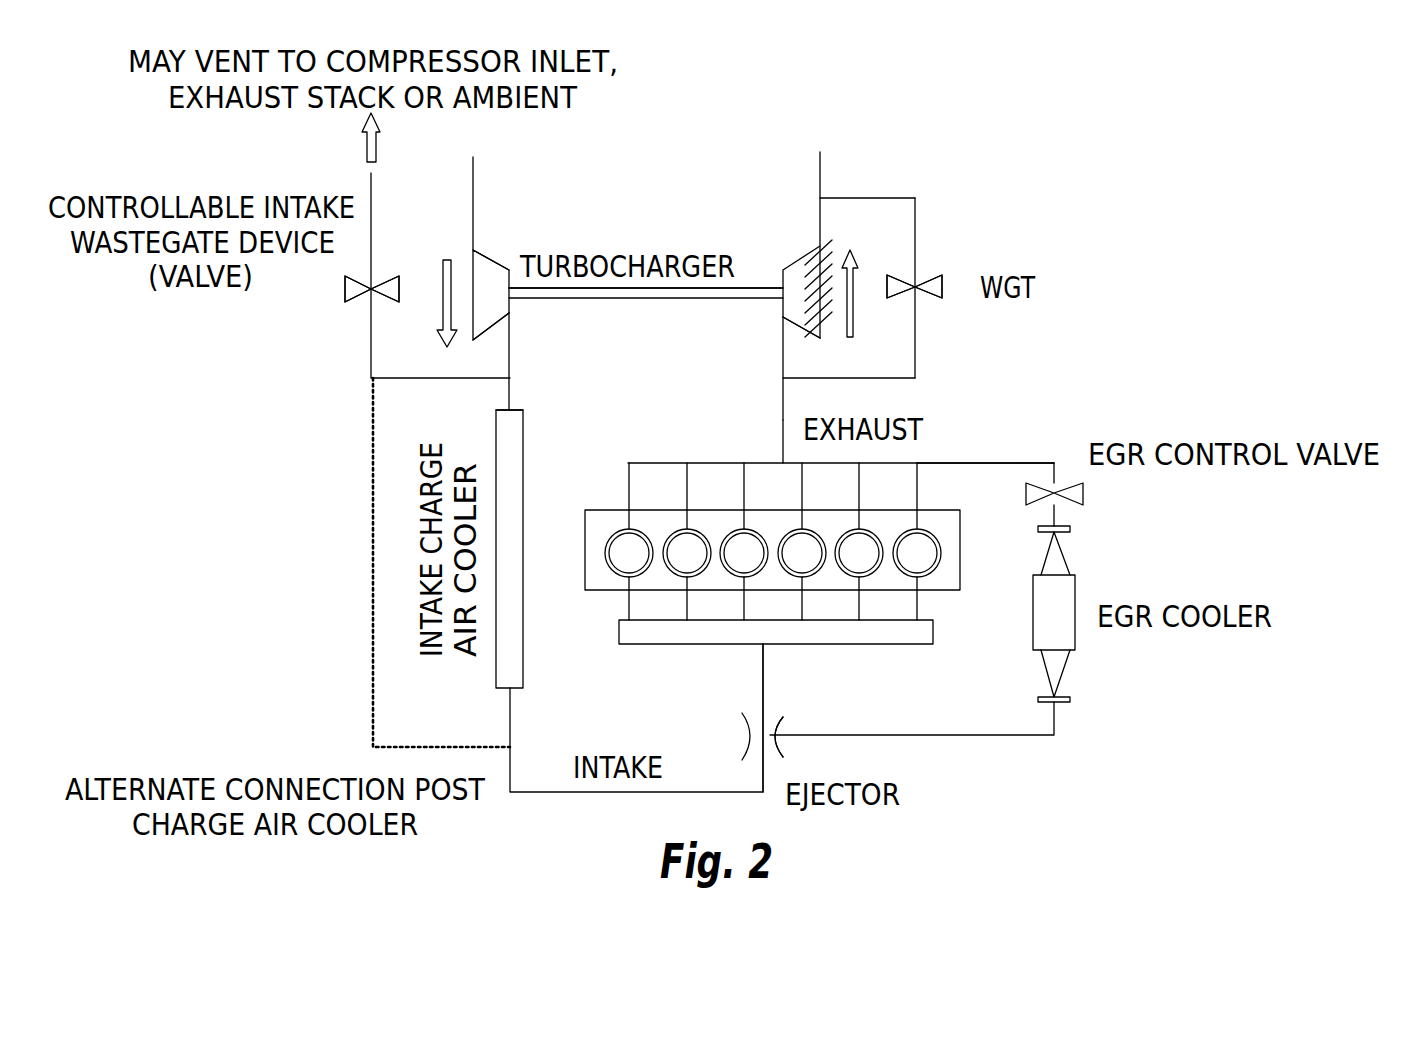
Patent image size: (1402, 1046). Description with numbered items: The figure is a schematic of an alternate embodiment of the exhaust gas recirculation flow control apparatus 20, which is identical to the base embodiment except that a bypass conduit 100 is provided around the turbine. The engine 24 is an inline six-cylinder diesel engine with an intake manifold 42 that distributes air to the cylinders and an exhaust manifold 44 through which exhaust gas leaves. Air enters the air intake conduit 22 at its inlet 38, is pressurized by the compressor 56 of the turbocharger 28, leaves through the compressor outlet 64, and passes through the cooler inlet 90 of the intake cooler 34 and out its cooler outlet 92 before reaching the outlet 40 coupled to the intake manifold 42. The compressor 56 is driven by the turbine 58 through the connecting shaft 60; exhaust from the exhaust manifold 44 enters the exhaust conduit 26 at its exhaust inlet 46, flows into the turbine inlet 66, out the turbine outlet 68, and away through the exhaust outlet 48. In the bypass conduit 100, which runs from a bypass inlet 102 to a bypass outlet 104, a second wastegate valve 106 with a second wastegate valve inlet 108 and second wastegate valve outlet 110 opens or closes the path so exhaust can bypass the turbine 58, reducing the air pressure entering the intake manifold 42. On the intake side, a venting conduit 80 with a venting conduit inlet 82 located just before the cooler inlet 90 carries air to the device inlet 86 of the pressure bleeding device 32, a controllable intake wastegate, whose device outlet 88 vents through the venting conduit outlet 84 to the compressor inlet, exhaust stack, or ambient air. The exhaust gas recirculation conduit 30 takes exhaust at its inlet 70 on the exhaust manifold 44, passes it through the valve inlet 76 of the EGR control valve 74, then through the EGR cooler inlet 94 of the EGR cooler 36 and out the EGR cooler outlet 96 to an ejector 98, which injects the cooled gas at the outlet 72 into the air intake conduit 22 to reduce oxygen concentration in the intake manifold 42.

The apparatus 20 is at (1058, 154).
The air intake conduit 22 is at (478, 200).
The engine 24 is at (945, 590).
The exhaust conduit 26 is at (783, 402).
The turbocharger 28 is at (781, 290).
The exhaust gas recirculation conduit 30 is at (1014, 735).
The pressure bleeding device 32 is at (345, 289).
The intake cooler 34 is at (496, 680).
The EGR cooler 36 is at (1076, 650).
The inlet 38 is at (475, 160).
The outlet 40 is at (765, 644).
The intake manifold 42 is at (645, 644).
The exhaust manifold 44 is at (690, 463).
The exhaust inlet 46 is at (782, 463).
The exhaust outlet 48 is at (817, 157).
The compressor 56 is at (490, 258).
The turbine 58 is at (803, 262).
The connecting shaft 60 is at (606, 299).
The compressor outlet 64 is at (510, 313).
The turbine inlet 66 is at (783, 317).
The turbine outlet 68 is at (822, 256).
The inlet 70 is at (915, 463).
The outlet 72 is at (745, 758).
The EGR control valve 74 is at (1083, 493).
The valve inlet 76 is at (1054, 483).
The venting conduit 80 is at (440, 378).
The venting conduit inlet 82 is at (510, 378).
The venting conduit outlet 84 is at (380, 174).
The device inlet 86 is at (371, 289).
The device outlet 88 is at (371, 289).
The cooler inlet 90 is at (523, 411).
The cooler outlet 92 is at (510, 690).
The EGR cooler inlet 94 is at (1062, 535).
The EGR cooler outlet 96 is at (1048, 697).
The ejector 98 is at (788, 716).
The bypass conduit 100 is at (915, 370).
The bypass inlet 102 is at (790, 378).
The bypass outlet 104 is at (820, 198).
The second wastegate valve 106 is at (918, 283).
The second wastegate valve inlet 108 is at (916, 290).
The second wastegate valve outlet 110 is at (915, 285).